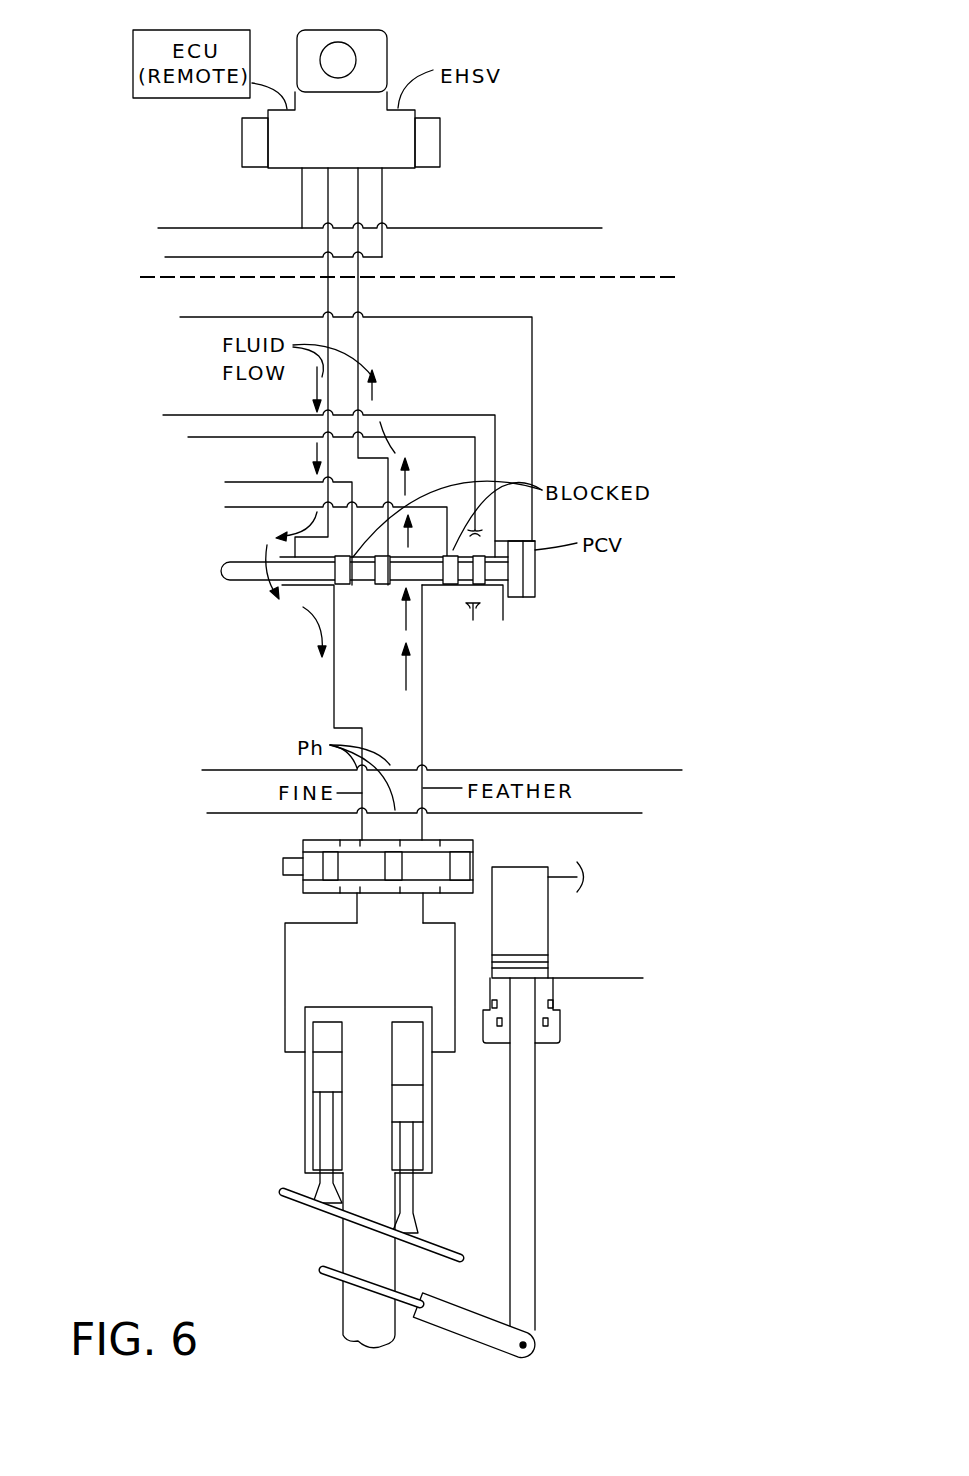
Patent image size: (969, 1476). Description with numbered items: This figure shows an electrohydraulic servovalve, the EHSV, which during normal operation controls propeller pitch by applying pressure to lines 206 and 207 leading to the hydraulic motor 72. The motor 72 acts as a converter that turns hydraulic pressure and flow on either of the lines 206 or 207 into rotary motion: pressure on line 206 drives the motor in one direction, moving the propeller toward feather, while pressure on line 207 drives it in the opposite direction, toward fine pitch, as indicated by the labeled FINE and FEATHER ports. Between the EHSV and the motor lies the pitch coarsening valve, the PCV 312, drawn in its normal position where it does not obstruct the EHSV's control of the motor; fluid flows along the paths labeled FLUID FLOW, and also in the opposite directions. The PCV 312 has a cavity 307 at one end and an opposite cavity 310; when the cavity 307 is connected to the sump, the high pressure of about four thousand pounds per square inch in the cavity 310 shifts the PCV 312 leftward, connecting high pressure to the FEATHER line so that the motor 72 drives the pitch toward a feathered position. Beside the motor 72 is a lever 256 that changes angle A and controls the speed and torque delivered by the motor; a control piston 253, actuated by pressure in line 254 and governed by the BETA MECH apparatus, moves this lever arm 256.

The motor 72 is at (305, 1133).
The line 206 is at (360, 297).
The line 207 is at (326, 296).
The control piston 253 is at (537, 955).
The line 254 is at (567, 980).
The lever 256 is at (483, 1313).
The cavity 307 is at (530, 568).
The cavity 310 is at (535, 588).
The PCV 312 is at (387, 582).